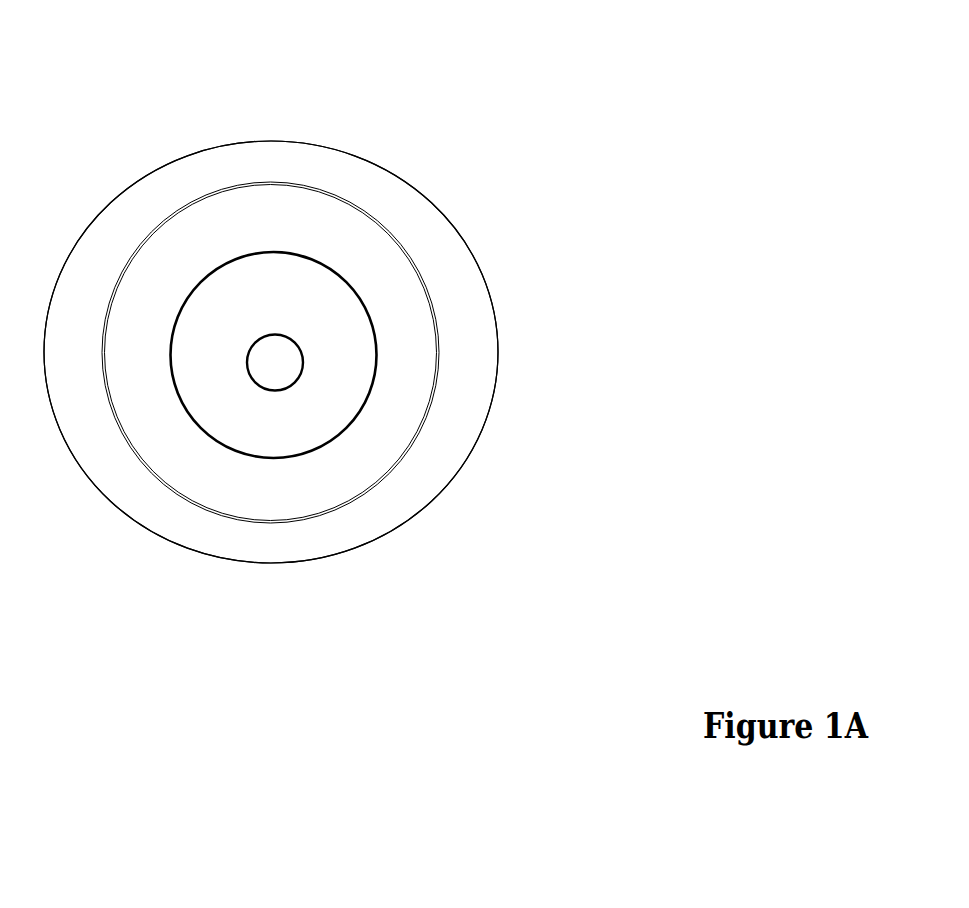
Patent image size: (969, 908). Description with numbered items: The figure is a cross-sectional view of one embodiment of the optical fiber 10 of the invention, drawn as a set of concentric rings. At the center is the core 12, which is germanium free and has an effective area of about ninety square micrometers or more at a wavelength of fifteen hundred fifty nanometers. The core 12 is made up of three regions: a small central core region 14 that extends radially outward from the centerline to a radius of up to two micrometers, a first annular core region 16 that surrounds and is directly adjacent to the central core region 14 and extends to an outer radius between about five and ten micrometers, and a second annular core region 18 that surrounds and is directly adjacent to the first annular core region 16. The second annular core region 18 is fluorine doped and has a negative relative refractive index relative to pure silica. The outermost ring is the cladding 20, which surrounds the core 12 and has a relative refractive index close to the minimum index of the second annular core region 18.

The optical fiber 10 is at (271, 290).
The core 12 is at (342, 207).
The central core region 14 is at (318, 341).
The first annular core region 16 is at (371, 373).
The second annular core region 18 is at (342, 235).
The cladding 20 is at (341, 149).